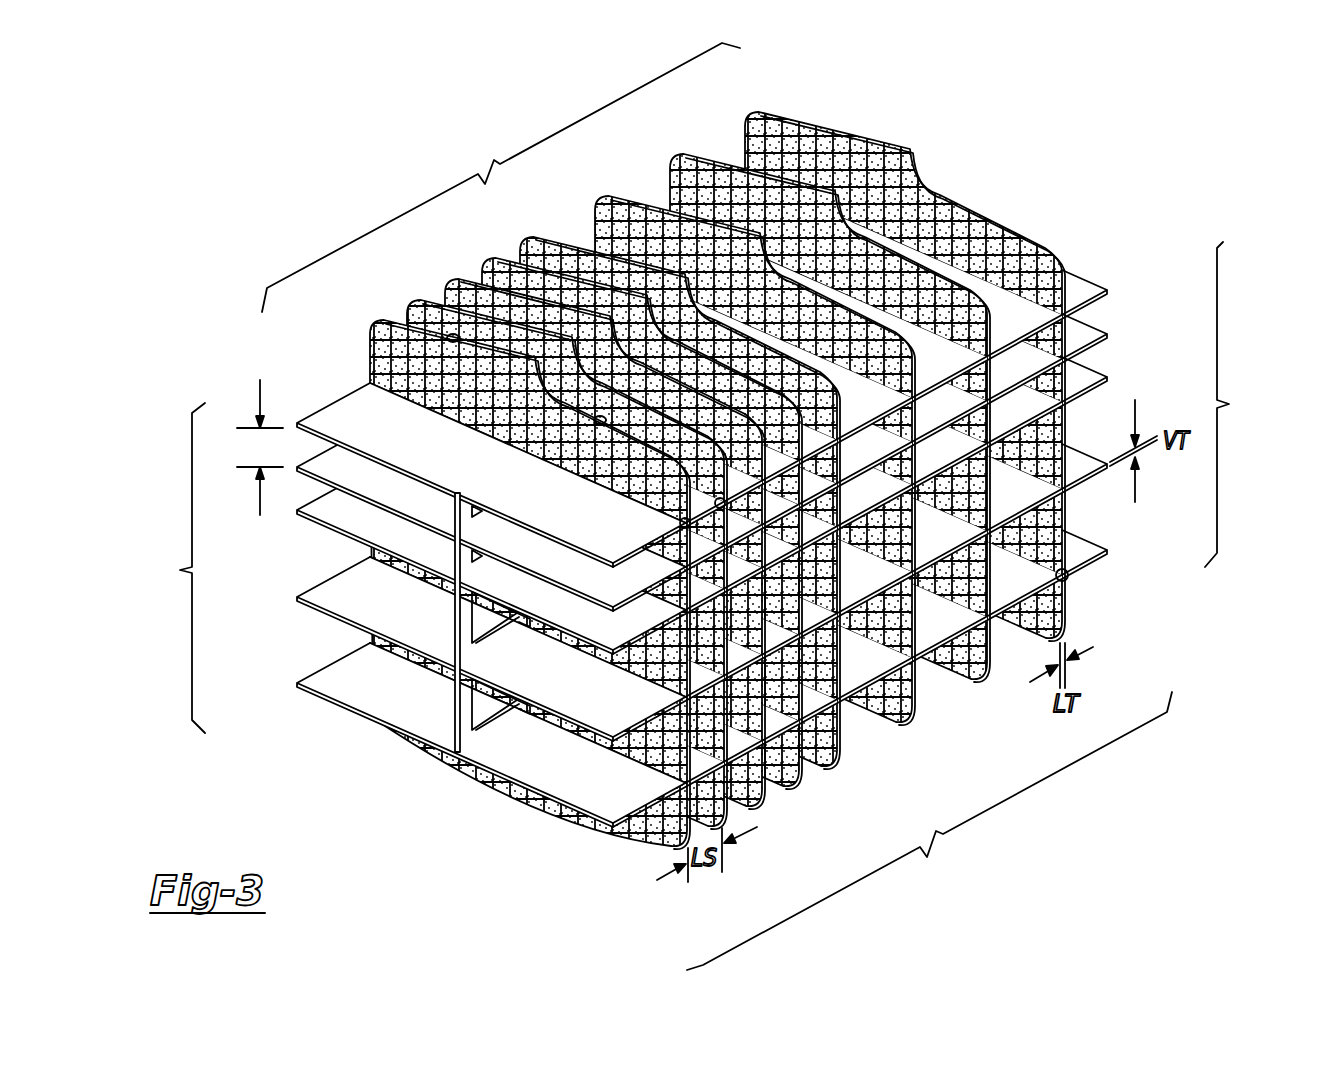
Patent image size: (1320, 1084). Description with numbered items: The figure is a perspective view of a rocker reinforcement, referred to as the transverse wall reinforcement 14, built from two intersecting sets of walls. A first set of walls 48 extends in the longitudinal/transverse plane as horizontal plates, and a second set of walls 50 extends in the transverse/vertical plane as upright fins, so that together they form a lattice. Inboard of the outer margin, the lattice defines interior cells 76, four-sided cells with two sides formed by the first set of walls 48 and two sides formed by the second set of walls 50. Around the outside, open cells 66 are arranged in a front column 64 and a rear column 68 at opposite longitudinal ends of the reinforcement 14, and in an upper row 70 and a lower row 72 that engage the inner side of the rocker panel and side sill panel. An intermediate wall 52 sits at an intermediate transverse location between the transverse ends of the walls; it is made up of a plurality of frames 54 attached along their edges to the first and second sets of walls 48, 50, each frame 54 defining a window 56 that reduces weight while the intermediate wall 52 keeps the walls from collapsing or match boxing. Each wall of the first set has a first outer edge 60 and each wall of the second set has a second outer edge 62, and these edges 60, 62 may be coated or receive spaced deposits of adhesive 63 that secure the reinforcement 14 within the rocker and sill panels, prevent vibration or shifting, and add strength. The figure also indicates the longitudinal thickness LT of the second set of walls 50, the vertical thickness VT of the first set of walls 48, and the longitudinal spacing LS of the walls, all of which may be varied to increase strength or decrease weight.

The transverse wall reinforcement 14 is at (462, 818).
The first set of walls 48 is at (1073, 292).
The second set of walls 50 is at (1012, 265).
The intermediate wall 52 is at (448, 715).
The frames 54 is at (498, 722).
The window 56 is at (483, 620).
The first outer edge 60 is at (1087, 484).
The second outer edge 62 is at (833, 128).
The adhesive 63 is at (453, 338).
The front column 64 is at (1231, 404).
The open cells 66 is at (1072, 523).
The rear column 68 is at (178, 568).
The upper row 70 is at (501, 177).
The lower row 72 is at (929, 831).
The interior cells 76 is at (928, 625).